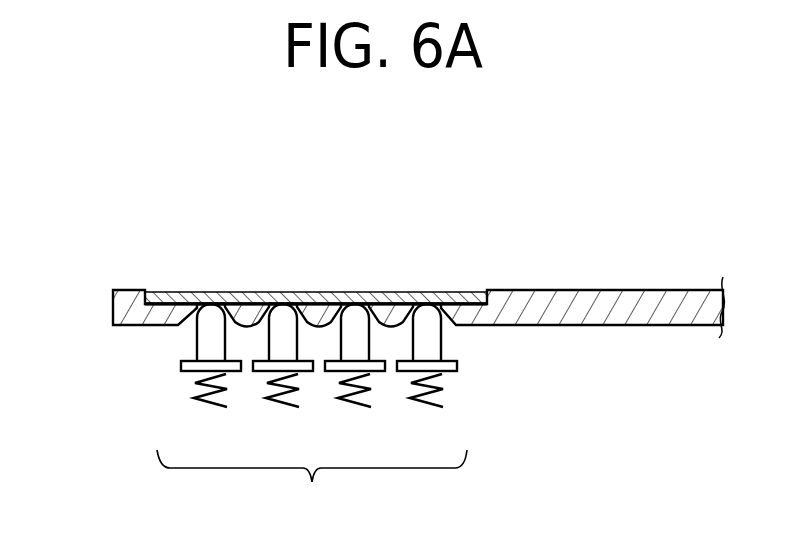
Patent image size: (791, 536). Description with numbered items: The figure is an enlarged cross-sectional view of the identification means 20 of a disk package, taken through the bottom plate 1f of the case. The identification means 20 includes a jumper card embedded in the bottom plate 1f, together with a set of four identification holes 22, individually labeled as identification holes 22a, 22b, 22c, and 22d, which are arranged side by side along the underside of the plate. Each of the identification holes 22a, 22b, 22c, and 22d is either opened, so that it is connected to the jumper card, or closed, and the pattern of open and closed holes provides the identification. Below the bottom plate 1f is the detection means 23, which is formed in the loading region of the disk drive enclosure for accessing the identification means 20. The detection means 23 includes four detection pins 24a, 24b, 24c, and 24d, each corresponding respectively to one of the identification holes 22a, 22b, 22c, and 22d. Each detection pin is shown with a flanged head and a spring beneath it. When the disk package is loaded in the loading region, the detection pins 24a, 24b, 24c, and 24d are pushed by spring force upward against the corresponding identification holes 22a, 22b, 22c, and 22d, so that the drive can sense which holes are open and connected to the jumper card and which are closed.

The identification means 20 is at (135, 336).
The bottom plate 1f is at (582, 312).
The identification holes 22 is at (322, 290).
The identification hole 22a is at (433, 290).
The identification hole 22b is at (360, 290).
The identification hole 22c is at (282, 290).
The identification hole 22d is at (212, 290).
The detection means 23 is at (312, 487).
The detection pin 24a is at (427, 337).
The detection pin 24b is at (362, 347).
The detection pin 24c is at (285, 352).
The detection pin 24d is at (203, 345).